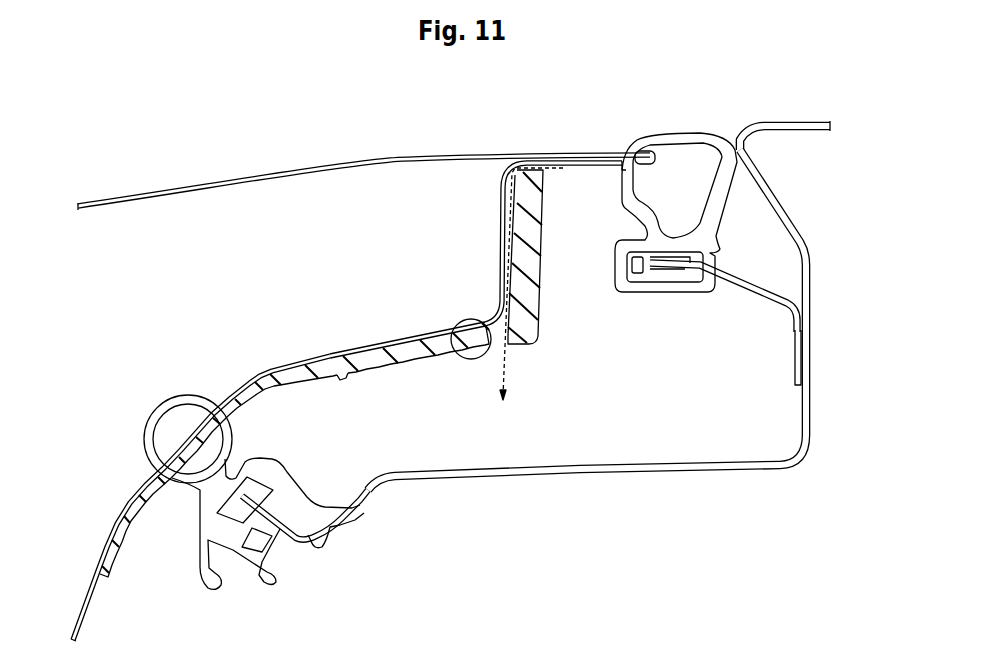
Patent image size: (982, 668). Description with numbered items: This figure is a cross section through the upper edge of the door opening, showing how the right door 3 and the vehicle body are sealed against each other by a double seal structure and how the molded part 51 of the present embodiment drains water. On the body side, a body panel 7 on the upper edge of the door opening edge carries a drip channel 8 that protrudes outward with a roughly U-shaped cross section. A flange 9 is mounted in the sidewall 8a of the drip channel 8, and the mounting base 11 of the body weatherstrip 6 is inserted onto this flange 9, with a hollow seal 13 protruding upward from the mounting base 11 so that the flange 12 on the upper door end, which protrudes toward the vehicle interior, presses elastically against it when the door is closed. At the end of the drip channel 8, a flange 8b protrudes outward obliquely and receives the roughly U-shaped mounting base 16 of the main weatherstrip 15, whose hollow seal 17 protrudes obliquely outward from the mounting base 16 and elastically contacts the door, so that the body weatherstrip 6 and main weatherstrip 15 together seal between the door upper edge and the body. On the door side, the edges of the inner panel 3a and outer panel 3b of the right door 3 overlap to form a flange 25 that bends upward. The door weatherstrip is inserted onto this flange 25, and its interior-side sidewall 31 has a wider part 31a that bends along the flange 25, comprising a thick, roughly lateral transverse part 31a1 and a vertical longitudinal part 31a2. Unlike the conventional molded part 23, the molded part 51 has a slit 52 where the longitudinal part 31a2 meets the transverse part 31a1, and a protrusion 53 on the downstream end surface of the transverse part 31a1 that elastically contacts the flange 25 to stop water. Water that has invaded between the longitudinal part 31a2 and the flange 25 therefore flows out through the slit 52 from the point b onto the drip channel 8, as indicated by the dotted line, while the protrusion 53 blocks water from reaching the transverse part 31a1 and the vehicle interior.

The right door 3 is at (414, 157).
The inner panel 3a is at (292, 364).
The outer panel 3b is at (290, 170).
The body weatherstrip 6 is at (621, 212).
The body panel 7 is at (780, 123).
The drip channel 8 is at (602, 474).
The sidewall 8a is at (812, 289).
The flange 8b is at (258, 502).
The flange 9 is at (757, 295).
The mounting base 11 is at (660, 292).
The flange 12 is at (597, 152).
The hollow seal 13 is at (680, 133).
The main weatherstrip 15 is at (199, 518).
The mounting base 16 is at (282, 450).
The hollow seal 17 is at (178, 395).
The molded part 23 is at (545, 340).
The flange 25 is at (386, 342).
The sidewall 31 is at (328, 377).
The wider part 31a is at (405, 362).
The transverse part 31a1 is at (455, 352).
The longitudinal part 31a2 is at (541, 262).
The molded part 51 is at (380, 372).
The slit 52 is at (490, 348).
The protrusion 53 is at (466, 320).
The point b is at (469, 317).